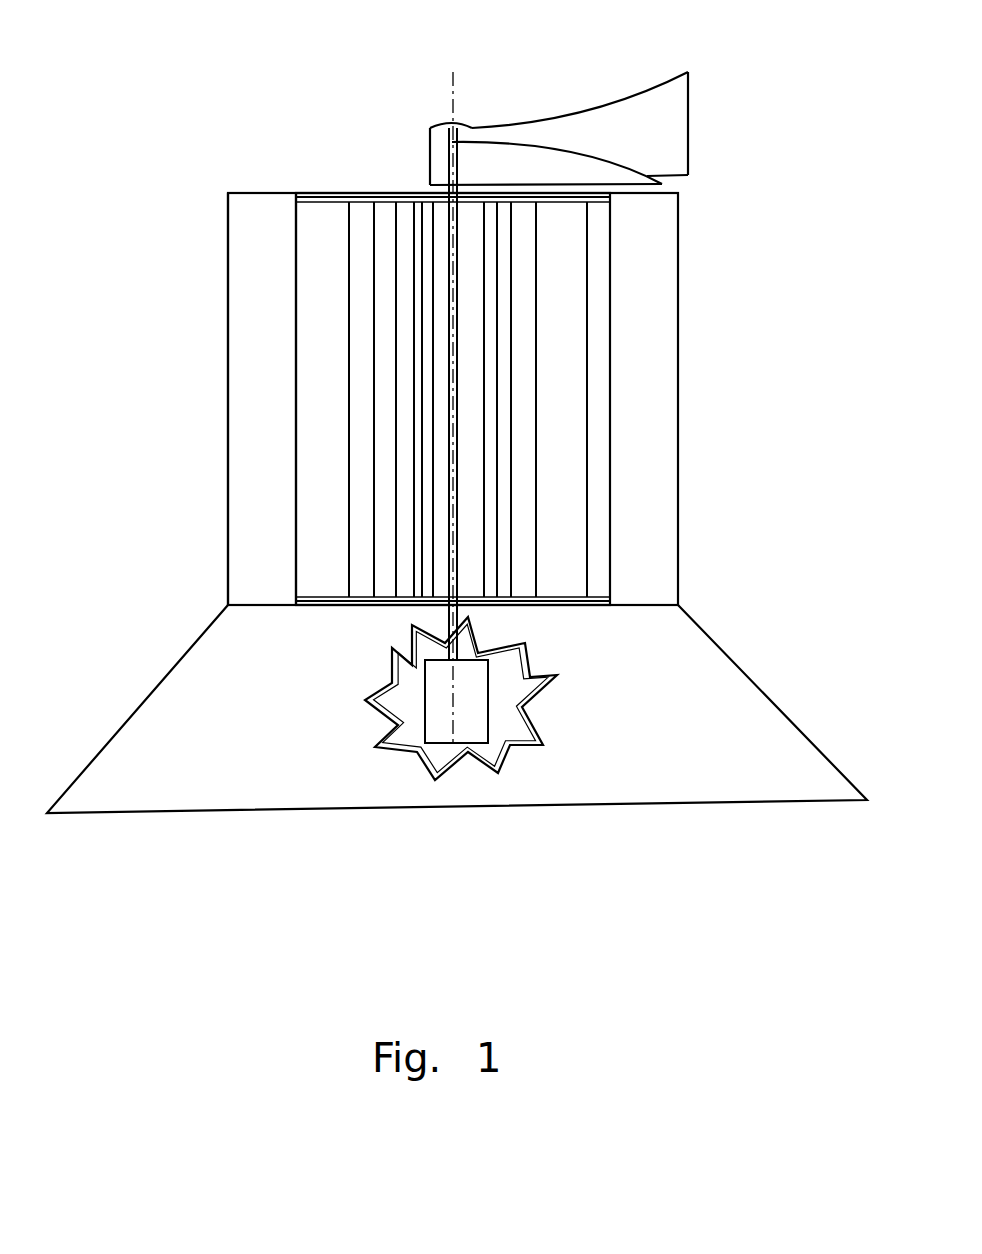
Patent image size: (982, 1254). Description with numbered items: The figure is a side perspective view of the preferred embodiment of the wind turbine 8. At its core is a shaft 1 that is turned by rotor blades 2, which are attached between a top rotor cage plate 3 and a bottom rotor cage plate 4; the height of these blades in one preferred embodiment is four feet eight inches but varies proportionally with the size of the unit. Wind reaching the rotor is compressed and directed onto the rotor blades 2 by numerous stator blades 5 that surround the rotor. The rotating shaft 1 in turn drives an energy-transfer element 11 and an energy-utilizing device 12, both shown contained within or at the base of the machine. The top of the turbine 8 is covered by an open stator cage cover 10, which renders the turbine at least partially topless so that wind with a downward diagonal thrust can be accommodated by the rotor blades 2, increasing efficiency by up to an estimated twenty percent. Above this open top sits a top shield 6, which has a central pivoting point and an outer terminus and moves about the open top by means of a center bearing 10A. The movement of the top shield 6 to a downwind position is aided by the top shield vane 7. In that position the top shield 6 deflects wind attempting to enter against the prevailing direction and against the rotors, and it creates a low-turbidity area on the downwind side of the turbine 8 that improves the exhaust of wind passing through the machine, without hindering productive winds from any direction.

The shaft 1 is at (457, 360).
The rotor blades 2 is at (363, 335).
The top rotor cage plate 3 is at (345, 193).
The bottom rotor cage plate 4 is at (335, 605).
The stator blades 5 is at (267, 360).
The top shield 6 is at (568, 168).
The top shield vane 7 is at (625, 122).
The wind turbine 8 is at (296, 422).
The open stator cage cover 10 is at (258, 193).
The center bearing 10A is at (452, 124).
The energy-transfer element 11 is at (480, 640).
The energy-utilizing device 12 is at (473, 707).